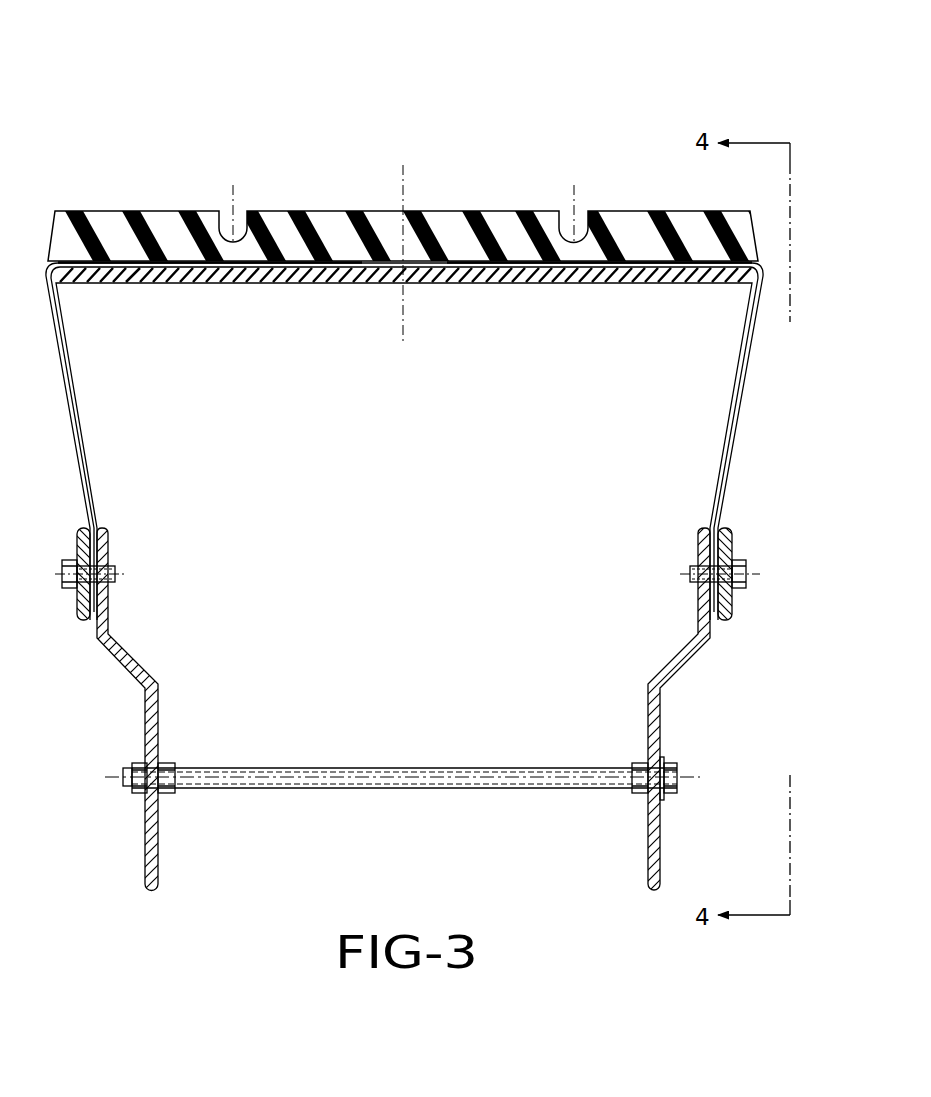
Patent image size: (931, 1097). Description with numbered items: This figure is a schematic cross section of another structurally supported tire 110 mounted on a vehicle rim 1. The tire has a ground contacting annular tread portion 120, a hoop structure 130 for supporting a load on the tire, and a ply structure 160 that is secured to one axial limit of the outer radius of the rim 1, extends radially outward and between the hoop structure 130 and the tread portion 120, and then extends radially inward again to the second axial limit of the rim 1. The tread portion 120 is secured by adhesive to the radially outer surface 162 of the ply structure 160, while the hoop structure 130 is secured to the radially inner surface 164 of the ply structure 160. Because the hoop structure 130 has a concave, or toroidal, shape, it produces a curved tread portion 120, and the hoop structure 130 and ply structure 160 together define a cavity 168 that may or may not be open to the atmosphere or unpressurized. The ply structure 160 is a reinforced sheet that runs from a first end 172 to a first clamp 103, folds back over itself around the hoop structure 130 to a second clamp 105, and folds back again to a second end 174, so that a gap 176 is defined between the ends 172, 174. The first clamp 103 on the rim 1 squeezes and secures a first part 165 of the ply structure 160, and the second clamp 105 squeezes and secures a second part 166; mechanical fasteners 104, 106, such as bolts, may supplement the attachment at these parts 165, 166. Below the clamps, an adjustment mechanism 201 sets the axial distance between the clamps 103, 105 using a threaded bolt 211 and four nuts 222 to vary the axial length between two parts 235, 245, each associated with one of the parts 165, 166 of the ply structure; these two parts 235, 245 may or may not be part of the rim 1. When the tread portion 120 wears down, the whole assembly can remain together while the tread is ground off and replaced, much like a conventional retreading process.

The structurally supported tire 110 is at (91, 106).
The ground contacting annular tread portion 120 is at (390, 210).
The radially outer surface 162 is at (190, 255).
The second end 174 is at (298, 254).
The gap 176 is at (428, 261).
The first end 172 is at (501, 254).
The ply structure 160 is at (69, 392).
The hoop structure 130 is at (491, 285).
The radially inner surface 164 is at (268, 285).
The cavity 168 is at (428, 421).
The second part 166 is at (107, 522).
The first part 165 is at (700, 522).
The second clamp 105 is at (64, 538).
The mechanical fastener 106 is at (59, 595).
The first clamp 103 is at (746, 535).
The mechanical fastener 104 is at (749, 595).
The part 245 is at (164, 857).
The part 235 is at (646, 857).
The threaded bolt 211 is at (407, 765).
The adjustment mechanism 201 is at (134, 804).
The nuts 222 is at (165, 762).
The vehicle rim 1 is at (692, 718).